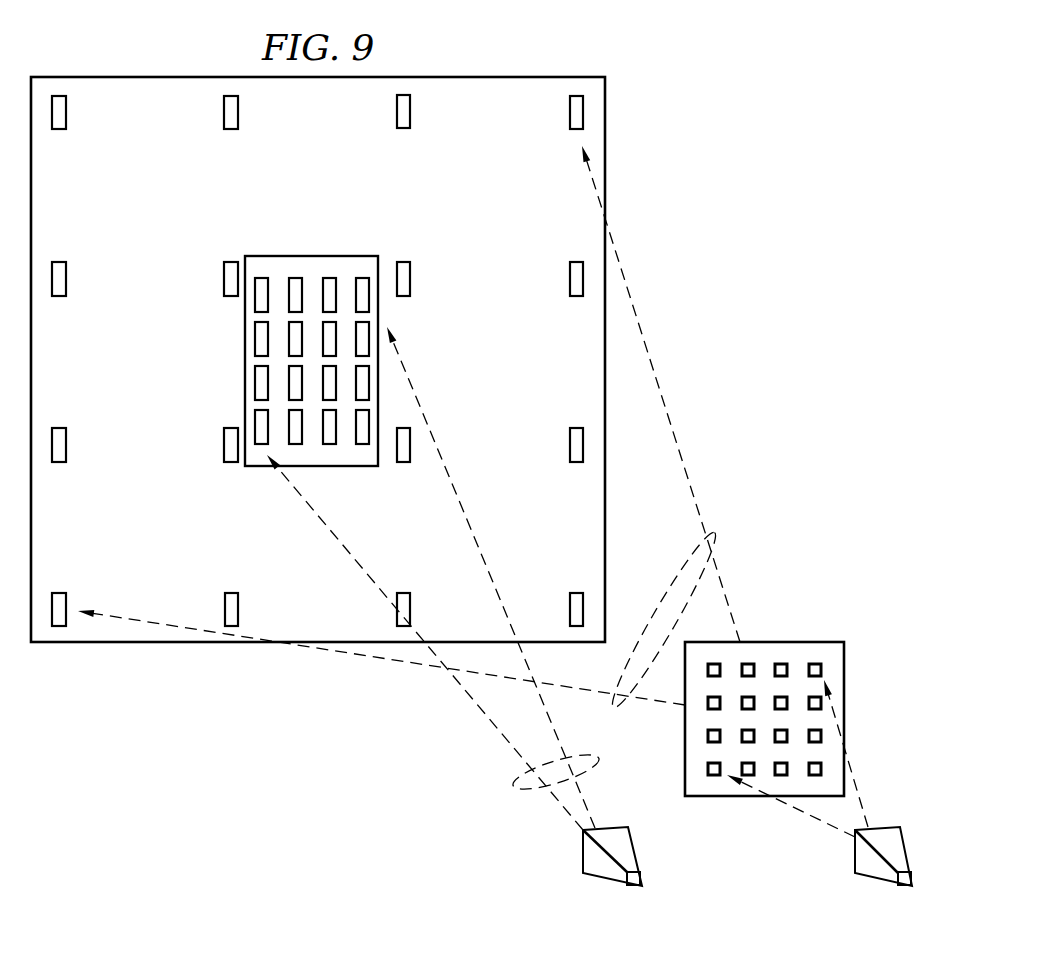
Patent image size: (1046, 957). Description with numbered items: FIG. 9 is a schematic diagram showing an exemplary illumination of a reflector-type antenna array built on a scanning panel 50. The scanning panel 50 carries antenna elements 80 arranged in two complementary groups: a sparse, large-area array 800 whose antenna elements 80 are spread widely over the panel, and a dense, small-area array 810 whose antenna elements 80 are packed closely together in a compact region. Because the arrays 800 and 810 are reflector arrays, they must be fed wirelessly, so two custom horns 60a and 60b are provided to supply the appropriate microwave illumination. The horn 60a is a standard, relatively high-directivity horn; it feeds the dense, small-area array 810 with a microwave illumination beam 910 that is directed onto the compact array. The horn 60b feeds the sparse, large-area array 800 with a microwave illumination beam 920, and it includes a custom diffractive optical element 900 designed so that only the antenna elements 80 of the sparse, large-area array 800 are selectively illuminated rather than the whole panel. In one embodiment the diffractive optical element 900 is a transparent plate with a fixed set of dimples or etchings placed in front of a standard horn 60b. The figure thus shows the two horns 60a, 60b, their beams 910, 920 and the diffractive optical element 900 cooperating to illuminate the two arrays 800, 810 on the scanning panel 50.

The scanning panel 50 is at (168, 66).
The antenna elements 80 is at (570, 108).
The sparse, large-area array 800 is at (164, 240).
The dense, small-area array 810 is at (245, 361).
The diffractive optical element 900 is at (795, 642).
The microwave illumination beam 910 is at (513, 785).
The microwave illumination beam 920 is at (715, 535).
The horn 60a is at (607, 882).
The horn 60b is at (880, 882).